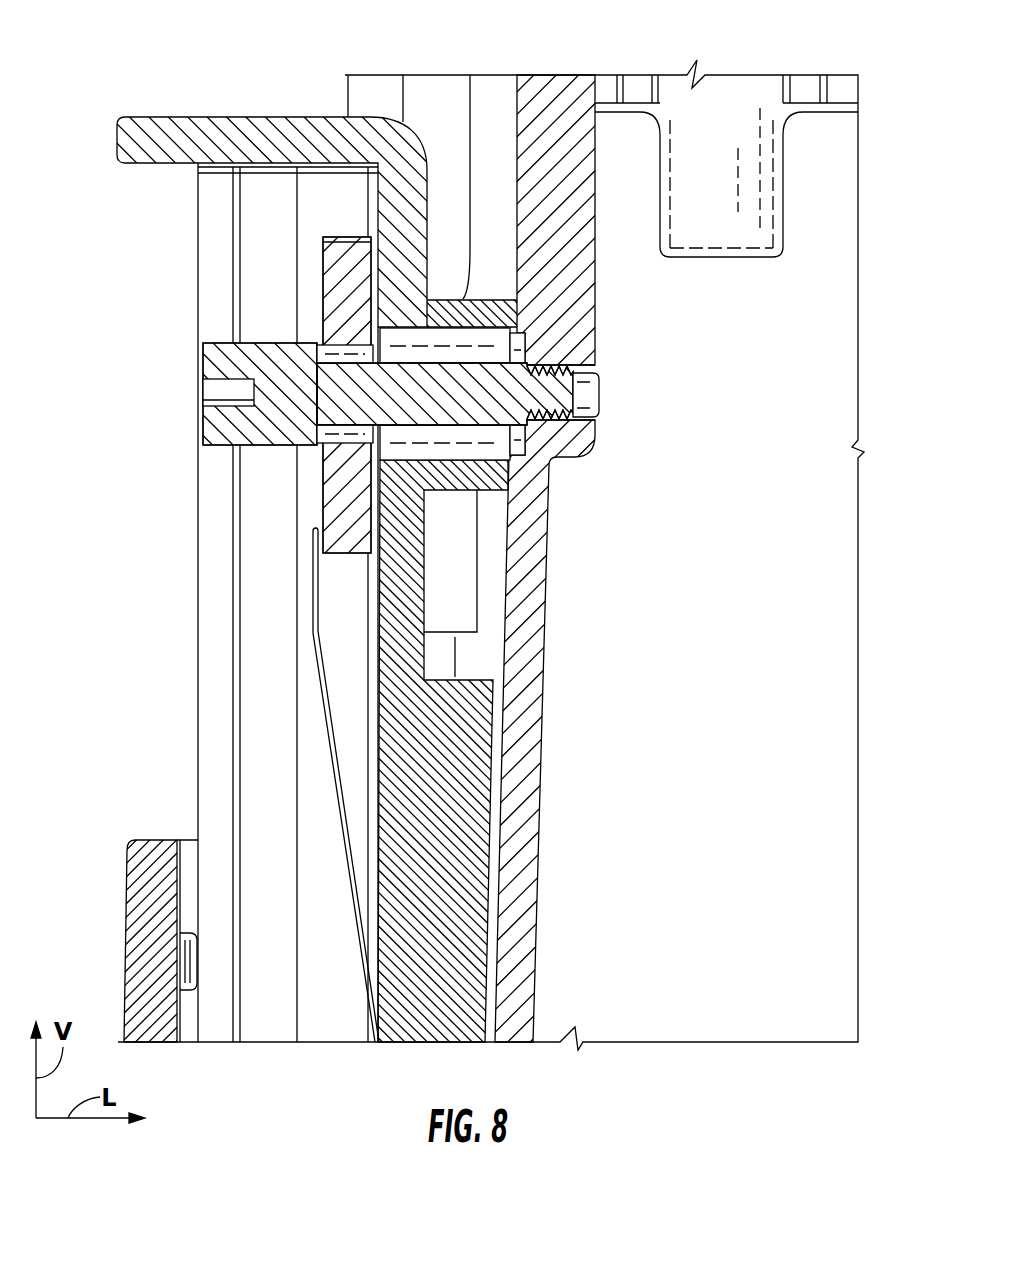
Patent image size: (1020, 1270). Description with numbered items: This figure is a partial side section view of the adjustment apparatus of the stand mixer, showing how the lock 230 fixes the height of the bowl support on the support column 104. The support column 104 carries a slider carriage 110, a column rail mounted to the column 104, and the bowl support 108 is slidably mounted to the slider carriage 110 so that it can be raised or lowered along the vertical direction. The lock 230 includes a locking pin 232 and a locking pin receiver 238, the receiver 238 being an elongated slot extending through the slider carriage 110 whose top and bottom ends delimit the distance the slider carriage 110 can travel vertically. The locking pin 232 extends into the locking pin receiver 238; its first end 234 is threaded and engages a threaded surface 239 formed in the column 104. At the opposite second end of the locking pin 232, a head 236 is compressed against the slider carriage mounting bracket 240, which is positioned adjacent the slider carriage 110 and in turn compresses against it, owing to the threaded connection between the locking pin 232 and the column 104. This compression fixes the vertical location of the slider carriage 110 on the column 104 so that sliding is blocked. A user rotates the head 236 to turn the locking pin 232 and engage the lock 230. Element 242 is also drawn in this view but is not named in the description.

The support column 104 is at (837, 625).
The bowl support 108 is at (140, 902).
The slider carriage 110 is at (215, 740).
The lock 230 is at (385, 370).
The locking pin 232 is at (458, 388).
The first end 234 is at (560, 398).
The head 236 is at (230, 426).
The locking pin receiver 238 is at (502, 431).
The threaded surface 239 is at (598, 357).
The slider carriage mounting bracket 240 is at (338, 289).
The spring clip 242 is at (355, 612).